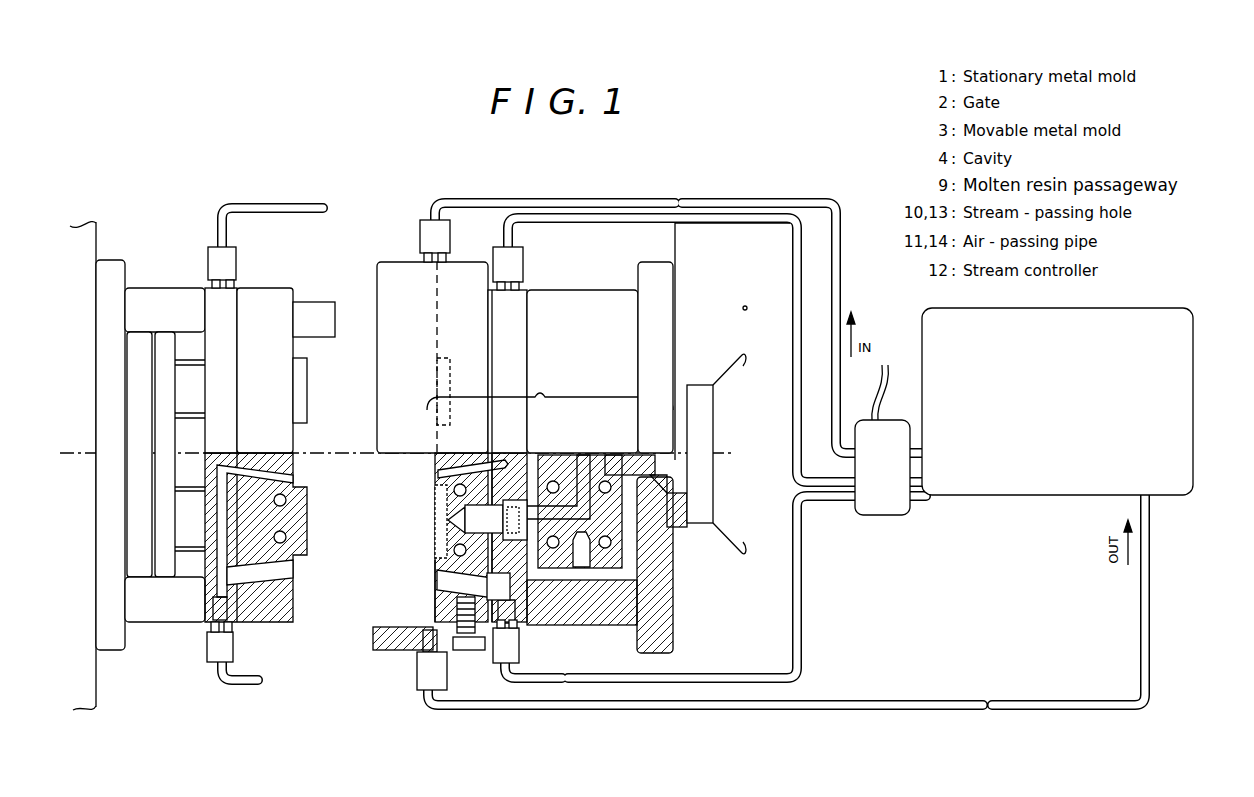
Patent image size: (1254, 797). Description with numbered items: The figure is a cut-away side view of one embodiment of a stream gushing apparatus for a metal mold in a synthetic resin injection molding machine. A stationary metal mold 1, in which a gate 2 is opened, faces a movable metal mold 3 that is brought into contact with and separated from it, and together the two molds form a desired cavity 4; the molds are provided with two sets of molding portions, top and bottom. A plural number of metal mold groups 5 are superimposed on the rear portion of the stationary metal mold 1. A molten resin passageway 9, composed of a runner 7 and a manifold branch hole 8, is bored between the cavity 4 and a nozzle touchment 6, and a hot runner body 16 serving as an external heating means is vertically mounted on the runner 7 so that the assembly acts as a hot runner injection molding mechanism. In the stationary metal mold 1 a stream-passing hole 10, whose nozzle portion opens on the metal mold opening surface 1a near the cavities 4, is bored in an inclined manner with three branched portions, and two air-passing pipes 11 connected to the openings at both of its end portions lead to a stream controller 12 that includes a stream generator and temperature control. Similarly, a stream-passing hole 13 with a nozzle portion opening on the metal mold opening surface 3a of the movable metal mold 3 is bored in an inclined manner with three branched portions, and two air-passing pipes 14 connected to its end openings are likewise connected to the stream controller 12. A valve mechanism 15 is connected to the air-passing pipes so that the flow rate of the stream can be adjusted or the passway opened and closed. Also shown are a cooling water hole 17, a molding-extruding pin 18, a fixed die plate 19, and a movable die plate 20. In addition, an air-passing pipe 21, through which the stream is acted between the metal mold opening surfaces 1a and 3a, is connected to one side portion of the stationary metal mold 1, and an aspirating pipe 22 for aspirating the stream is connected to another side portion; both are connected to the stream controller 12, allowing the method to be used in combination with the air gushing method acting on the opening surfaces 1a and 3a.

The stationary metal mold 1 is at (432, 442).
The metal mold opening surface 1a is at (434, 566).
The gate 2 is at (452, 526).
The movable metal mold 3 is at (326, 474).
The metal mold opening surface 3a is at (296, 598).
The cavity 4 is at (452, 362).
The metal mold groups 5 is at (553, 384).
The nozzle touchment 6 is at (662, 463).
The runner 7 is at (470, 582).
The manifold branch hole 8 is at (577, 512).
The molten resin passageway 9 is at (690, 570).
The stream-passing hole 10 is at (466, 456).
The air-passing pipes 11 is at (514, 232).
The stream controller 12 is at (992, 496).
The stream-passing hole 13 is at (288, 471).
The air-passing pipes 14 is at (297, 213).
The valve mechanism 15 is at (888, 510).
The hot runner body 16 is at (516, 455).
The cooling water hole 17 is at (285, 508).
The molding-extruding pin 18 is at (185, 417).
The fixed die plate 19 is at (677, 239).
The movable die plate 20 is at (88, 242).
The air-passing pipe 21 is at (773, 200).
The aspirating pipe 22 is at (1042, 700).